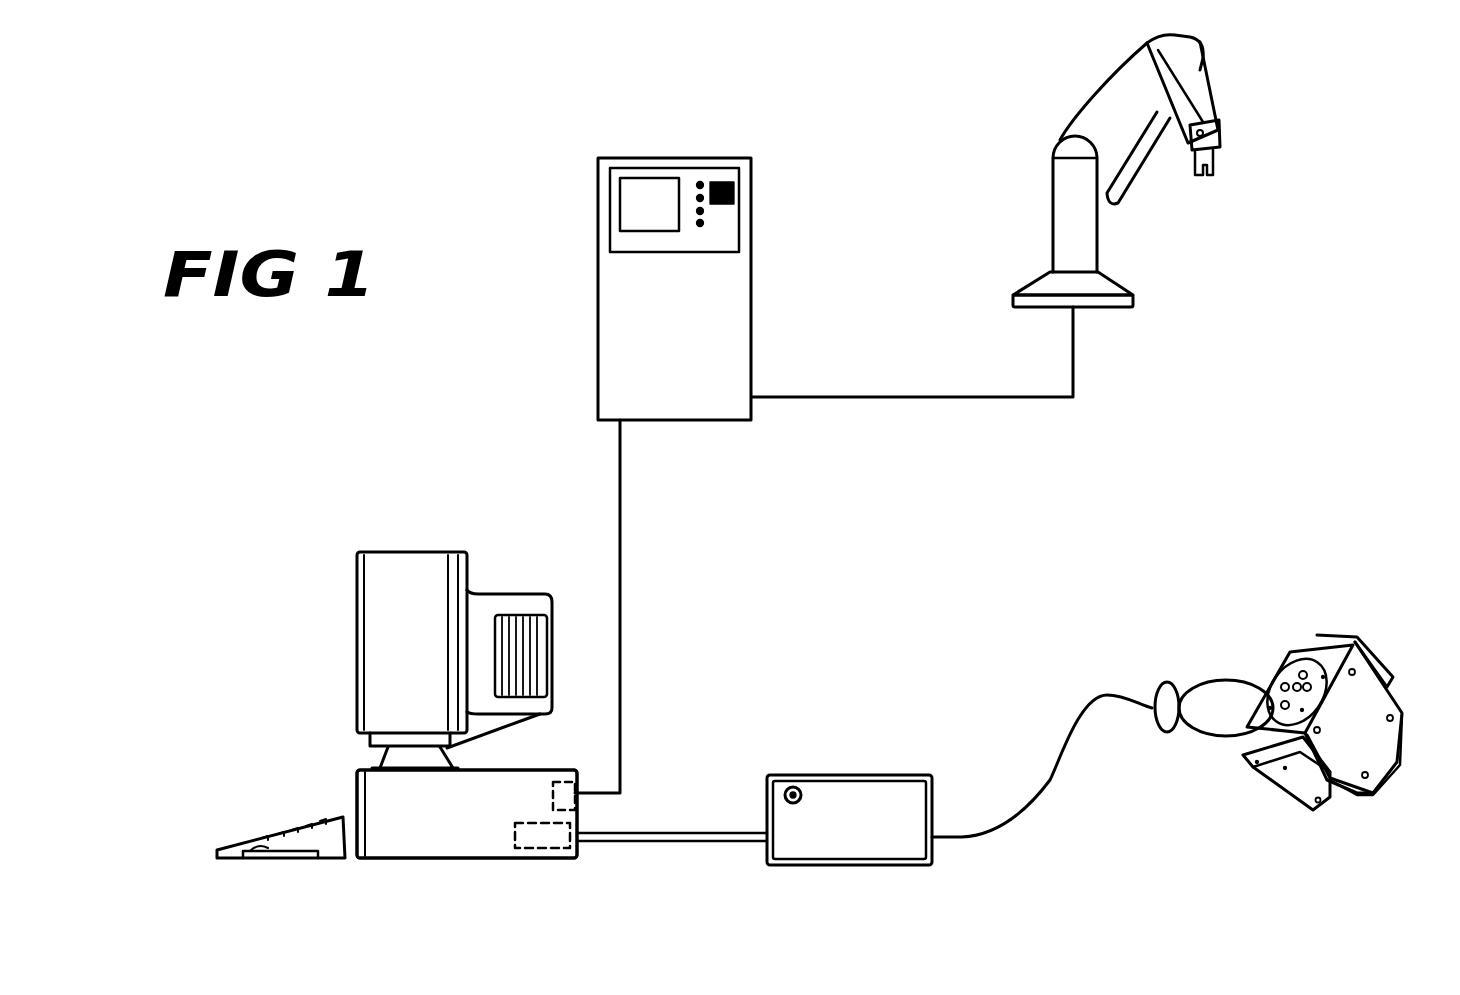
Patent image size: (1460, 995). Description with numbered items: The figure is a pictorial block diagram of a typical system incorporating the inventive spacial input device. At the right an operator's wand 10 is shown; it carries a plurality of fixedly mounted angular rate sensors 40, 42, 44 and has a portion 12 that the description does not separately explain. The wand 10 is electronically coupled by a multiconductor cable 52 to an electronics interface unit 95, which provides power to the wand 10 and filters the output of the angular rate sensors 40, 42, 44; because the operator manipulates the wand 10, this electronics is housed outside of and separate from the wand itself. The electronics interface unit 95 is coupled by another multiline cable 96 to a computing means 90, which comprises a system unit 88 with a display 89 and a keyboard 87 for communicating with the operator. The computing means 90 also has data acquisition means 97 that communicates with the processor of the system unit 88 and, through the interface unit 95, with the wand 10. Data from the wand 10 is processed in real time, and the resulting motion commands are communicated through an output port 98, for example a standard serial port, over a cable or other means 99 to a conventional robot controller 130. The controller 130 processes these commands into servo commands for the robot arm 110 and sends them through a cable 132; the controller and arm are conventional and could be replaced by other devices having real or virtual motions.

The wand 10 is at (1270, 653).
The grip portion 12 is at (1217, 740).
The angular rate sensor 40 is at (1300, 795).
The angular rate sensor 42 is at (1358, 797).
The angular rate sensor 44 is at (1363, 645).
The multiconductor cable 52 is at (1047, 785).
The keyboard 87 is at (280, 840).
The system unit 88 is at (380, 793).
The display 89 is at (413, 562).
The computing means 90 is at (470, 862).
The electronics interface unit 95 is at (834, 775).
The multiline cable 96 is at (655, 833).
The data acquisition means 97 is at (552, 848).
The output port 98 is at (580, 790).
The communication cable 99 is at (623, 612).
The robot arm 110 is at (1120, 70).
The robot controller 130 is at (716, 150).
The cable 132 is at (911, 392).